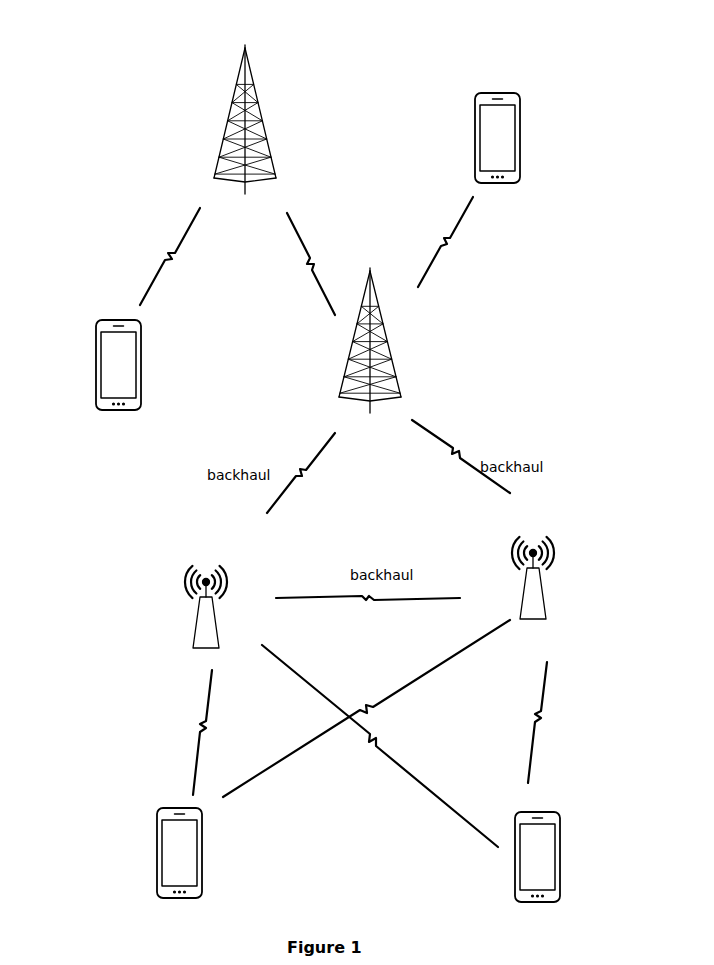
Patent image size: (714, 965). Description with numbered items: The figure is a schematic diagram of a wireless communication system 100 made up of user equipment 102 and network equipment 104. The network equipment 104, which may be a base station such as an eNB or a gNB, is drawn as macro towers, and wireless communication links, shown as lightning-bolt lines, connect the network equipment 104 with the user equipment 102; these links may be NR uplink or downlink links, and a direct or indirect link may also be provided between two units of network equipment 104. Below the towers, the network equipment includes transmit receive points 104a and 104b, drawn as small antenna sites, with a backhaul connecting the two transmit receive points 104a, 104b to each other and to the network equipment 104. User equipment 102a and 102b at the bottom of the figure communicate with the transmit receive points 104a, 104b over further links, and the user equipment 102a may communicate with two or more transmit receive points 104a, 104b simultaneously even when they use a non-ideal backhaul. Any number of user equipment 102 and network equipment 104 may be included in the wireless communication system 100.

The wireless communication system 100 is at (124, 66).
The user equipment 102 is at (307, 251).
The network equipment 104 is at (228, 125).
The transmit receive point 104a is at (176, 607).
The small cell base station 104b is at (561, 578).
The user equipment 102a is at (151, 853).
The user equipment 102b is at (562, 857).